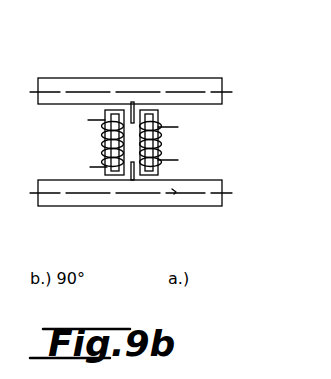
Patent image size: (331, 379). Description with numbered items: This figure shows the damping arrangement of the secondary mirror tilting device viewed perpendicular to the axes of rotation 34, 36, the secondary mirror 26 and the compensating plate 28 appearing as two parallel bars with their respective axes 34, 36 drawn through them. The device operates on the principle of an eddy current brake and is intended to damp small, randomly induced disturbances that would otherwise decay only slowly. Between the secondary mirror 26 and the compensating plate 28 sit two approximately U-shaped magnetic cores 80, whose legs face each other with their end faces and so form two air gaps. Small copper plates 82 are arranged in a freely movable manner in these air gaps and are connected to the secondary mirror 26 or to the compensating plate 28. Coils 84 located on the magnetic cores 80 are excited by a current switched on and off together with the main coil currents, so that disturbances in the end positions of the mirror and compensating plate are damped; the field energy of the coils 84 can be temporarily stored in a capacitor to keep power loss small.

The secondary mirror 26 is at (80, 200).
The compensating plate 28 is at (72, 83).
The axis of rotation 34 is at (164, 195).
The axis of rotation 36 is at (120, 92).
The magnetic core 80 is at (104, 172).
The copper plate 82 is at (133, 105).
The coil 84 is at (104, 149).